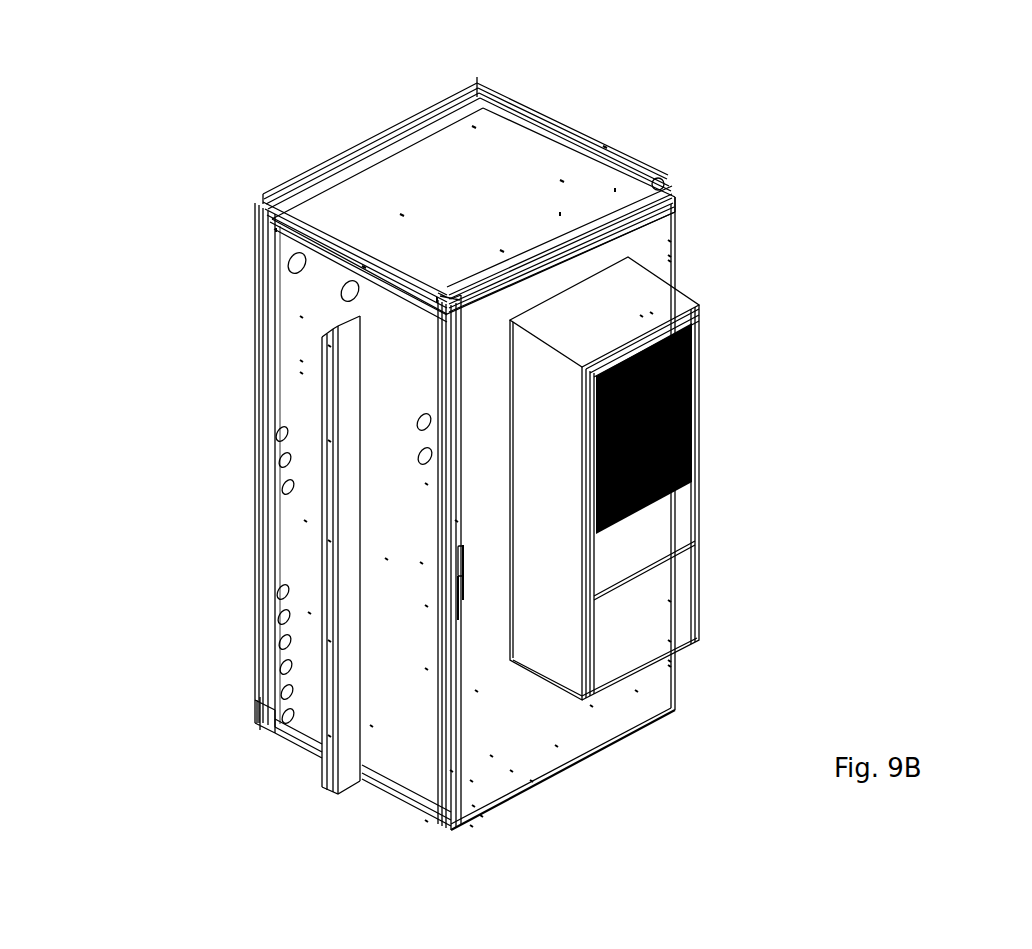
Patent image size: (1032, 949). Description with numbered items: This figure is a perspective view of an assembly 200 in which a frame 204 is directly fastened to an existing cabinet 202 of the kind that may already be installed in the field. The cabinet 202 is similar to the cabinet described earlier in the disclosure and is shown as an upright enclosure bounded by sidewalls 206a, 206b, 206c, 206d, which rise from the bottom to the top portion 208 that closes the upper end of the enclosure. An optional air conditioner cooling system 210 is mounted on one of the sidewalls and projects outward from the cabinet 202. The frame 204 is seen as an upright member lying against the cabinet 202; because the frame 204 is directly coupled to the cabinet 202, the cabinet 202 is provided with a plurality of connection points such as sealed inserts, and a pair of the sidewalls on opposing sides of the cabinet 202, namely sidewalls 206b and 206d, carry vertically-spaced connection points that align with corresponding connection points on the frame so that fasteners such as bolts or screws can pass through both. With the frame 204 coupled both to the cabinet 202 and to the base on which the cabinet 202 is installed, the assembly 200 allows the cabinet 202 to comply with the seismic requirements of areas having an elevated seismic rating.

The assembly 200 is at (98, 206).
The cabinet 202 is at (254, 173).
The frame 204 is at (325, 487).
The sidewall 206a is at (508, 712).
The sidewall 206b is at (636, 166).
The sidewall 206c is at (422, 119).
The sidewall 206d is at (408, 741).
The top portion 208 is at (496, 144).
The air conditioner cooling system 210 is at (700, 363).